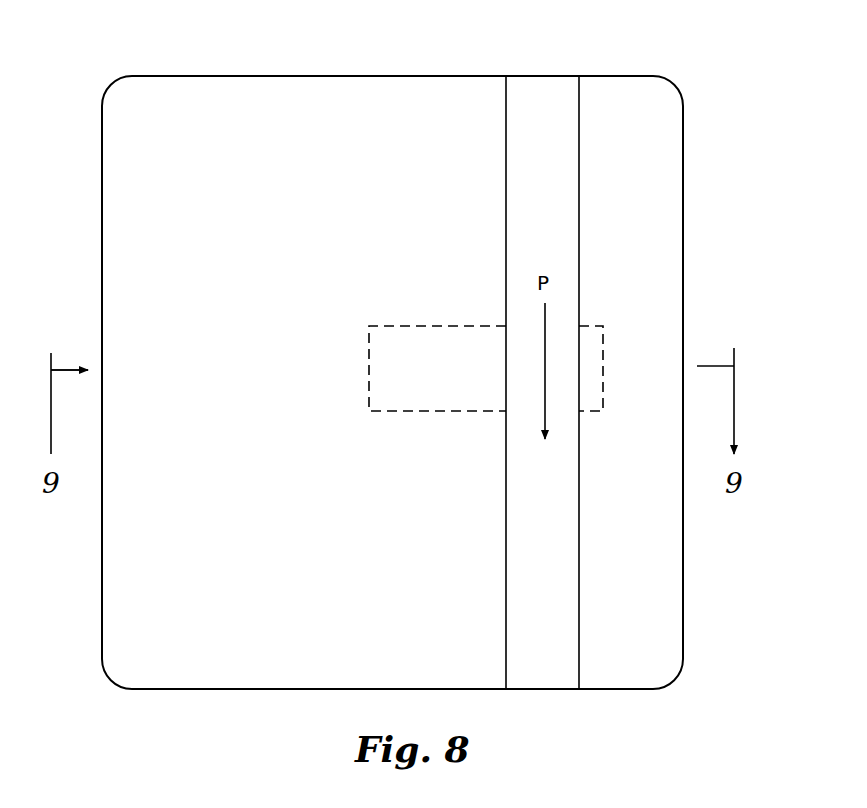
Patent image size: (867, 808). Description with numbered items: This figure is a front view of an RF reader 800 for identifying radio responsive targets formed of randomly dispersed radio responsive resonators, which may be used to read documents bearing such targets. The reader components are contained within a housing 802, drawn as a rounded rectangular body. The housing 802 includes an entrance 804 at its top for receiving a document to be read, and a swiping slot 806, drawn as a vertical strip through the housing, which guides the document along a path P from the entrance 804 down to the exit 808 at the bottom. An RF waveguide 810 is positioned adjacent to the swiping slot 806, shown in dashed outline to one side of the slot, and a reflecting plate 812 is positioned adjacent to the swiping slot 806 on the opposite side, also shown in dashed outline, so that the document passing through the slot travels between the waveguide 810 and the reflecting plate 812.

The RF reader 800 is at (441, 382).
The housing 802 is at (682, 180).
The entrance 804 is at (546, 73).
The swiping slot 806 is at (542, 109).
The exit 808 is at (549, 691).
The RF waveguide 810 is at (413, 325).
The reflecting plate 812 is at (603, 325).